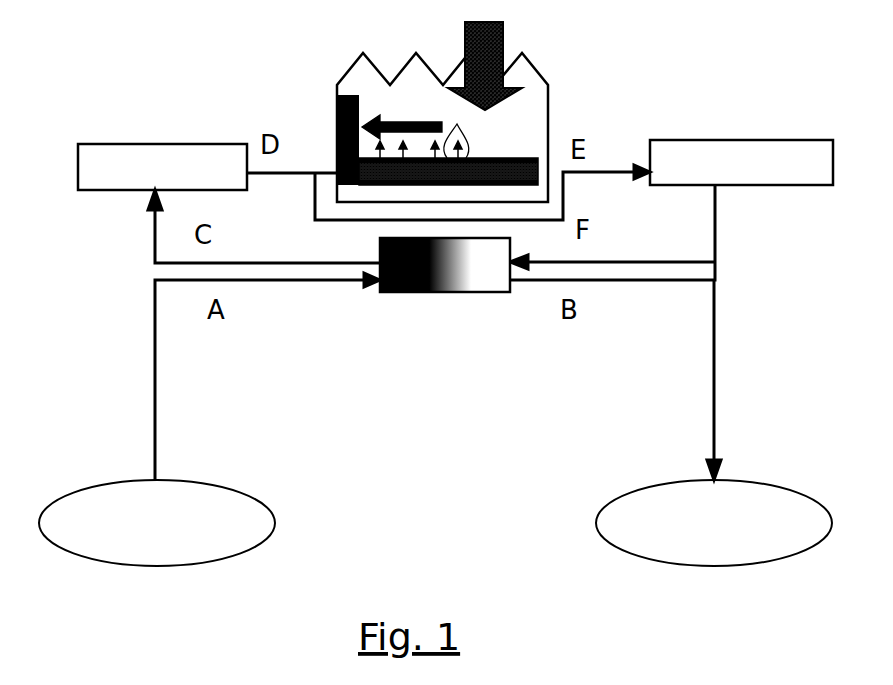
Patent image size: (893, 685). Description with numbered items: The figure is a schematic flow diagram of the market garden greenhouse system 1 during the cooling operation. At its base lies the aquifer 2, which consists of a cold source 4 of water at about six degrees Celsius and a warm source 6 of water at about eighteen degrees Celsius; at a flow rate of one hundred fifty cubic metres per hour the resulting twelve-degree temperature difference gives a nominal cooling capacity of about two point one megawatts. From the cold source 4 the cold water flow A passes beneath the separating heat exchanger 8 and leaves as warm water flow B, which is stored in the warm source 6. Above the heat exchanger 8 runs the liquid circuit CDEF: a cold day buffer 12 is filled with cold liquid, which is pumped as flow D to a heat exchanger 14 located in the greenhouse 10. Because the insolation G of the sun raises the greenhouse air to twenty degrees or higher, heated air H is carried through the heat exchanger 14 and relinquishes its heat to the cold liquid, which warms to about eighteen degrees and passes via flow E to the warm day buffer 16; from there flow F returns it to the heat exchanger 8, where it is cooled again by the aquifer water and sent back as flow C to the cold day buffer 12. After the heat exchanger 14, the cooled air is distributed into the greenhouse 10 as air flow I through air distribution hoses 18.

The system 1 is at (115, 119).
The aquifer 2 is at (383, 507).
The cold source 4 is at (78, 502).
The warm source 6 is at (655, 492).
The separating heat exchanger 8 is at (460, 297).
The greenhouse 10 is at (532, 93).
The cold day buffer 12 is at (175, 153).
The heat exchanger 14 is at (342, 103).
The warm day buffer 16 is at (748, 148).
The air distribution hoses 18 is at (478, 168).